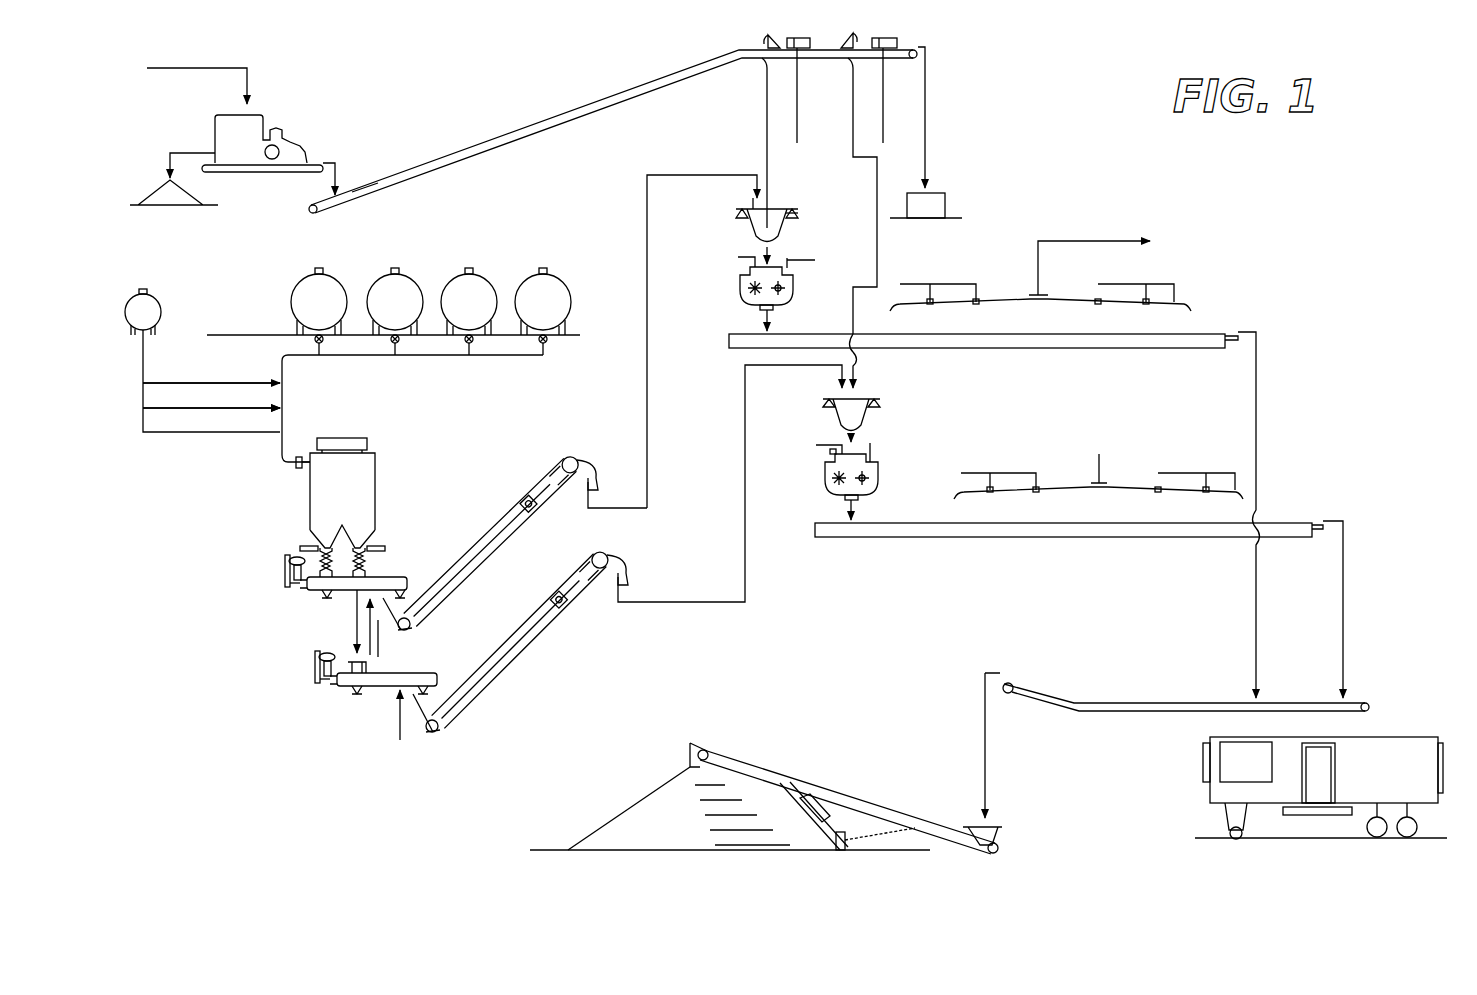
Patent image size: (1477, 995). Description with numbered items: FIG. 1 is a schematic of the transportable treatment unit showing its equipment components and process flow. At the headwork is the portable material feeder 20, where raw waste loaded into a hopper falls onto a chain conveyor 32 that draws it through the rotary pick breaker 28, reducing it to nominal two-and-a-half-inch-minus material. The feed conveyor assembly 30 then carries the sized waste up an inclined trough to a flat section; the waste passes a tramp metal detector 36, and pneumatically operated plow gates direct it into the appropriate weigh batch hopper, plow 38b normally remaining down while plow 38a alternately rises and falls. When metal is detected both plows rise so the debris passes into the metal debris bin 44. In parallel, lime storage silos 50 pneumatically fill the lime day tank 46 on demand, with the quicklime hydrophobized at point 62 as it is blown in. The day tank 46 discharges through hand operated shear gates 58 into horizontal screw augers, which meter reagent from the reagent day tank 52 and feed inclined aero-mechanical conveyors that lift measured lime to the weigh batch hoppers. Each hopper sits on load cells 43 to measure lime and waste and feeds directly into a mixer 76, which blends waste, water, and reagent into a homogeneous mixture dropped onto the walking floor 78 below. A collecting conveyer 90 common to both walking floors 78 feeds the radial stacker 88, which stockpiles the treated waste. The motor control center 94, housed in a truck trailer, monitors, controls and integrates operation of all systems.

The portable material feeder 20 is at (272, 114).
The rotary pick breaker 28 is at (278, 156).
The feed conveyor assembly 30 is at (657, 114).
The chain conveyor 32 is at (245, 165).
The tramp metal detector 36 is at (525, 130).
The plow gate 38a is at (794, 38).
The plow gate 38b is at (892, 38).
The load cells 43 is at (793, 212).
The metal debris bin 44 is at (933, 195).
The lime day tank 46 is at (365, 470).
The lime storage silos 50 is at (530, 283).
The reagent day tank 52 is at (235, 318).
The shear gates 58 is at (305, 542).
The hydrophobizing application point 62 is at (296, 475).
The mixer 76 is at (822, 470).
The walking floor 78 is at (1215, 335).
The radial stacker 88 is at (712, 755).
The collecting conveyer 90 is at (1205, 706).
The motor control center 94 is at (1390, 750).